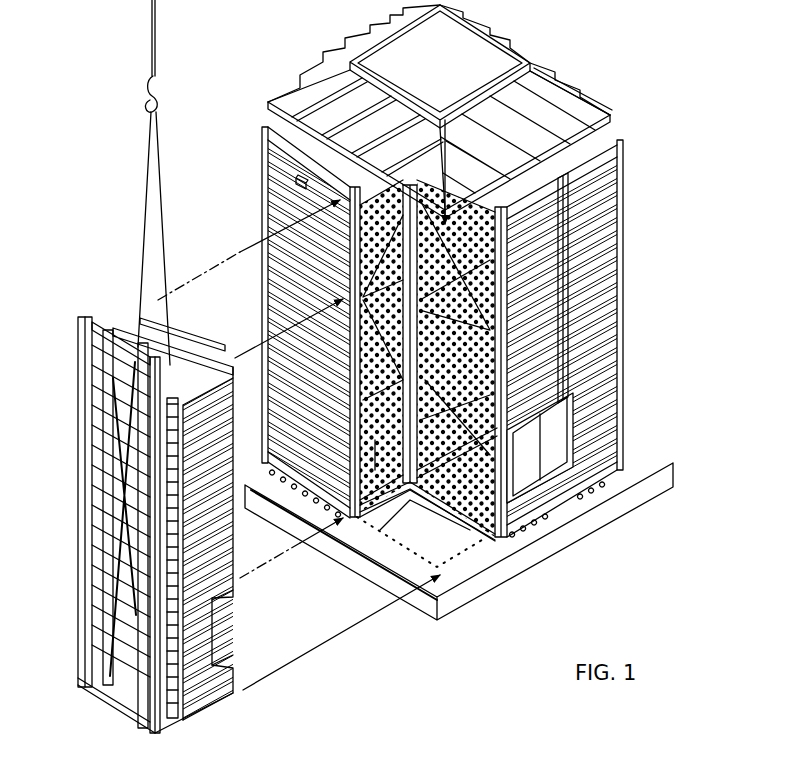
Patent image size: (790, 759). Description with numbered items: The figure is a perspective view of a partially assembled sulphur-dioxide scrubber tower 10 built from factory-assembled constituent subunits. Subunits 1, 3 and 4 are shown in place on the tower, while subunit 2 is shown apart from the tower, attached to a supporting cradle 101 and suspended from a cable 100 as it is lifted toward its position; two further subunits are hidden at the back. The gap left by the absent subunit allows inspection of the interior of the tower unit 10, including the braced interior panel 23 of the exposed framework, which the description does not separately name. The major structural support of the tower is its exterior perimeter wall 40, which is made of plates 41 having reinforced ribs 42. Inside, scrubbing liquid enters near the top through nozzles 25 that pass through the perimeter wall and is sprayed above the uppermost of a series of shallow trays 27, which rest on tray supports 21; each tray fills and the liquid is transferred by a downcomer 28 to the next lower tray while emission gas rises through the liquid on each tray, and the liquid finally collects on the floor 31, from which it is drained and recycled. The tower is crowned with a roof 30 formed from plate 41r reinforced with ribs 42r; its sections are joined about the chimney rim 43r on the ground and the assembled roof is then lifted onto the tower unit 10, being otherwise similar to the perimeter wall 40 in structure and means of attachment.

The subunit 1 is at (262, 144).
The subunit 2 is at (141, 525).
The subunit 3 is at (522, 530).
The subunit 4 is at (625, 408).
The scrubber tower 10 is at (450, 273).
The tray supports 21 is at (400, 404).
The braced interior wall panel 23 is at (450, 333).
The nozzles 25 is at (296, 180).
The trays 27 is at (455, 415).
The downcomer 28 is at (376, 445).
The roof 30 is at (452, 111).
The floor 31 is at (462, 505).
The perimeter wall 40 is at (448, 322).
The plates 41 is at (587, 338).
The reinforced ribs 42 is at (596, 366).
The plate 41r is at (593, 91).
The ribs 42r is at (550, 90).
The chimney rim 43r is at (478, 48).
The cable 100 is at (158, 42).
The supporting cradle 101 is at (78, 560).